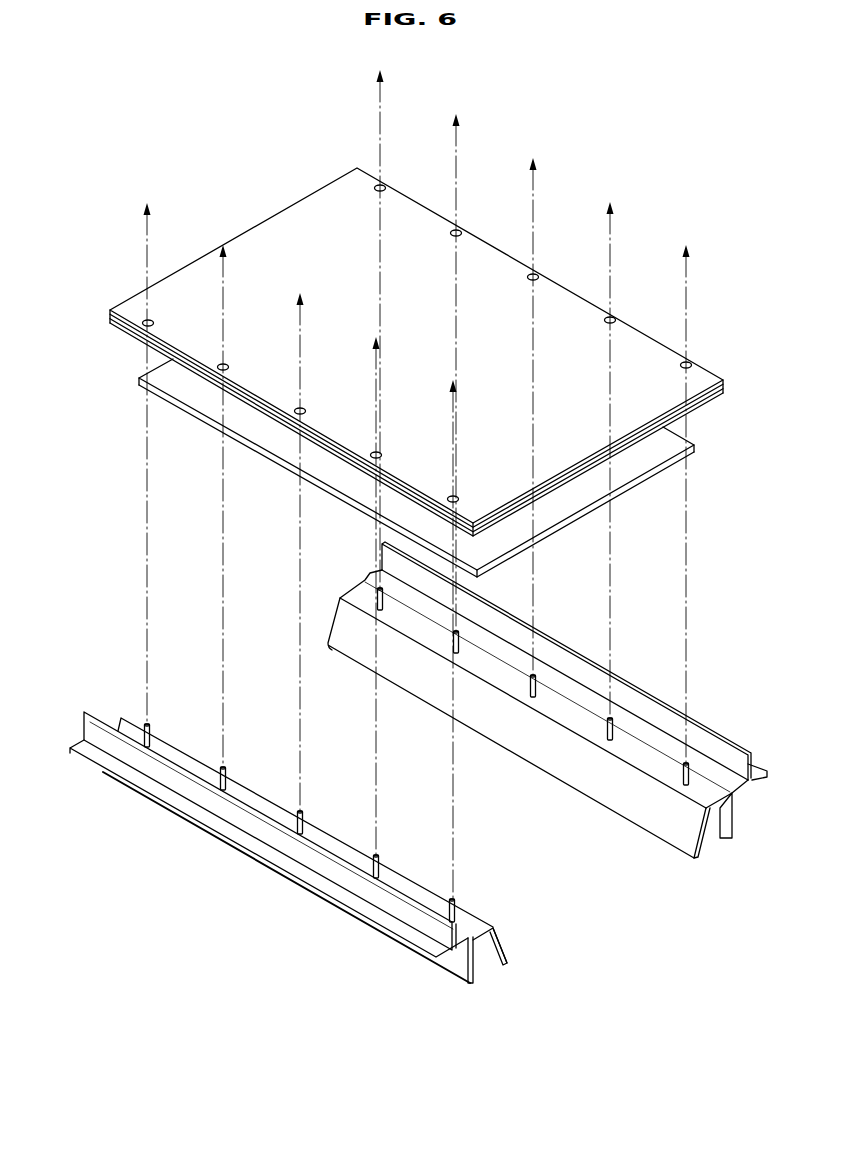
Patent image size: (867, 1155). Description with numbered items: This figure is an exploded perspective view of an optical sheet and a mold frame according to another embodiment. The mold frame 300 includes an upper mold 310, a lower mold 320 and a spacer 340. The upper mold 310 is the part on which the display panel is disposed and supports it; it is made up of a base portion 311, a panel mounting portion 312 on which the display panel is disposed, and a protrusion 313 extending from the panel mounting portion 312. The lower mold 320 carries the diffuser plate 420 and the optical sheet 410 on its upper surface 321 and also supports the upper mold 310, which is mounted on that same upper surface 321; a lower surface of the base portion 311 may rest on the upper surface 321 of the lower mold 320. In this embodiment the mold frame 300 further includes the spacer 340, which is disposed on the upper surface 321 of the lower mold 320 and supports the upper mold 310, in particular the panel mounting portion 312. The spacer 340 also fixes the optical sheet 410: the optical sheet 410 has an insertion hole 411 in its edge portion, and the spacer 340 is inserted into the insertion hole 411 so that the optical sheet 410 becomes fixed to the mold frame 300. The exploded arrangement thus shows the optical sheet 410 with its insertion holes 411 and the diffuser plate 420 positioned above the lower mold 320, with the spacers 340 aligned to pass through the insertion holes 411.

The mold frame 300 is at (409, 806).
The upper mold 310 is at (281, 891).
The base portion 311 is at (459, 942).
The panel mounting portion 312 is at (437, 932).
The protrusion 313 is at (397, 948).
The lower mold 320 is at (507, 955).
The upper surface 321 is at (483, 925).
The spacer 340 is at (462, 908).
The optical sheet 410 is at (396, 352).
The insertion hole 411 is at (142, 318).
The diffuser plate 420 is at (160, 368).